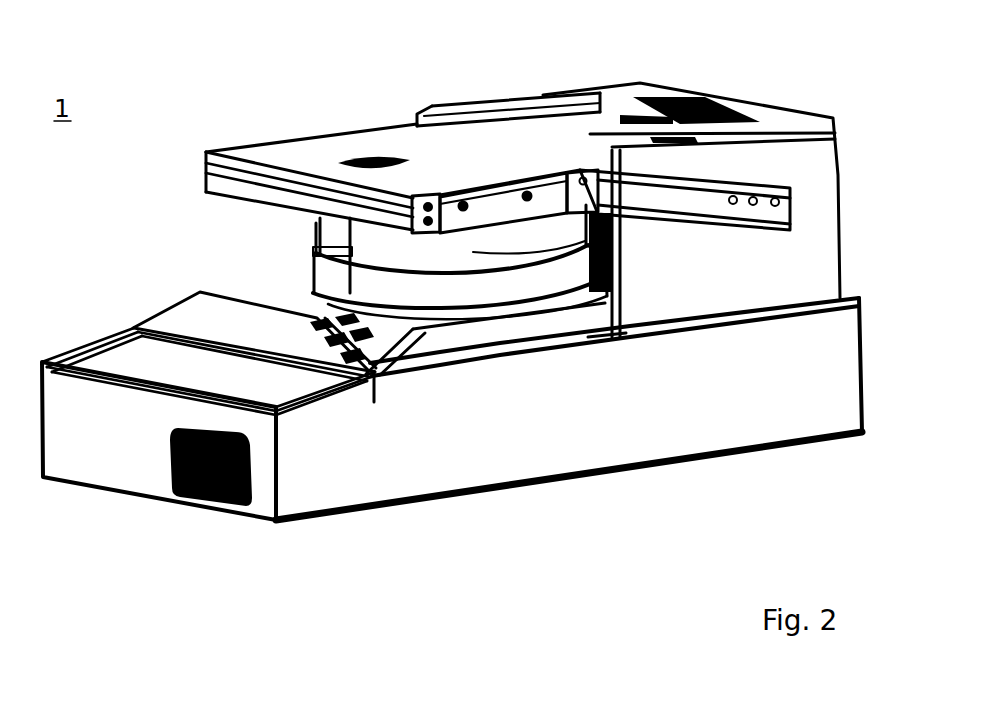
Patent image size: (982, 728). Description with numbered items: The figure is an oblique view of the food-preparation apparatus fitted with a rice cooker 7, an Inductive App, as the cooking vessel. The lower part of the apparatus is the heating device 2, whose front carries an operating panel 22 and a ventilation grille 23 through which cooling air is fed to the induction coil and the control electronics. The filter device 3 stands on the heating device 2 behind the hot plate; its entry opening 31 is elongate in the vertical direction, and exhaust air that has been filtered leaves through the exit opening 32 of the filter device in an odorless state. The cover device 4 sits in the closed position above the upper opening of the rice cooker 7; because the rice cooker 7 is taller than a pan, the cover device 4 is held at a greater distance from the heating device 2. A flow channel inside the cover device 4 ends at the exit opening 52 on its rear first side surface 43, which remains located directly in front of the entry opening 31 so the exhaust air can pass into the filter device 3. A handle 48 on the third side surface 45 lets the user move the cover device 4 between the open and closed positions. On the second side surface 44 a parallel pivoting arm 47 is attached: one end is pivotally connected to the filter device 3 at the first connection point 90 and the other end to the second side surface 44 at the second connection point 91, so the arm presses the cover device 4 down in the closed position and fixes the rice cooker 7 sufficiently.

The heating device 2 is at (552, 406).
The filter device 3 is at (576, 106).
The cover device 4 is at (351, 124).
The rice cooker 7 is at (303, 277).
The operating panel 22 is at (180, 365).
The ventilation grille 23 is at (193, 498).
The entry opening of the filter device 31 is at (617, 227).
The exit opening of the filter device 32 is at (703, 96).
The first side surface 43 is at (595, 128).
The second side surface 44 is at (482, 205).
The third side surface 45 is at (240, 187).
The parallel pivoting arm 47 is at (687, 192).
The handle 48 is at (337, 212).
The exit opening of the flow channel 52 is at (512, 109).
The first connection point 90 is at (787, 202).
The second connection point 91 is at (585, 177).